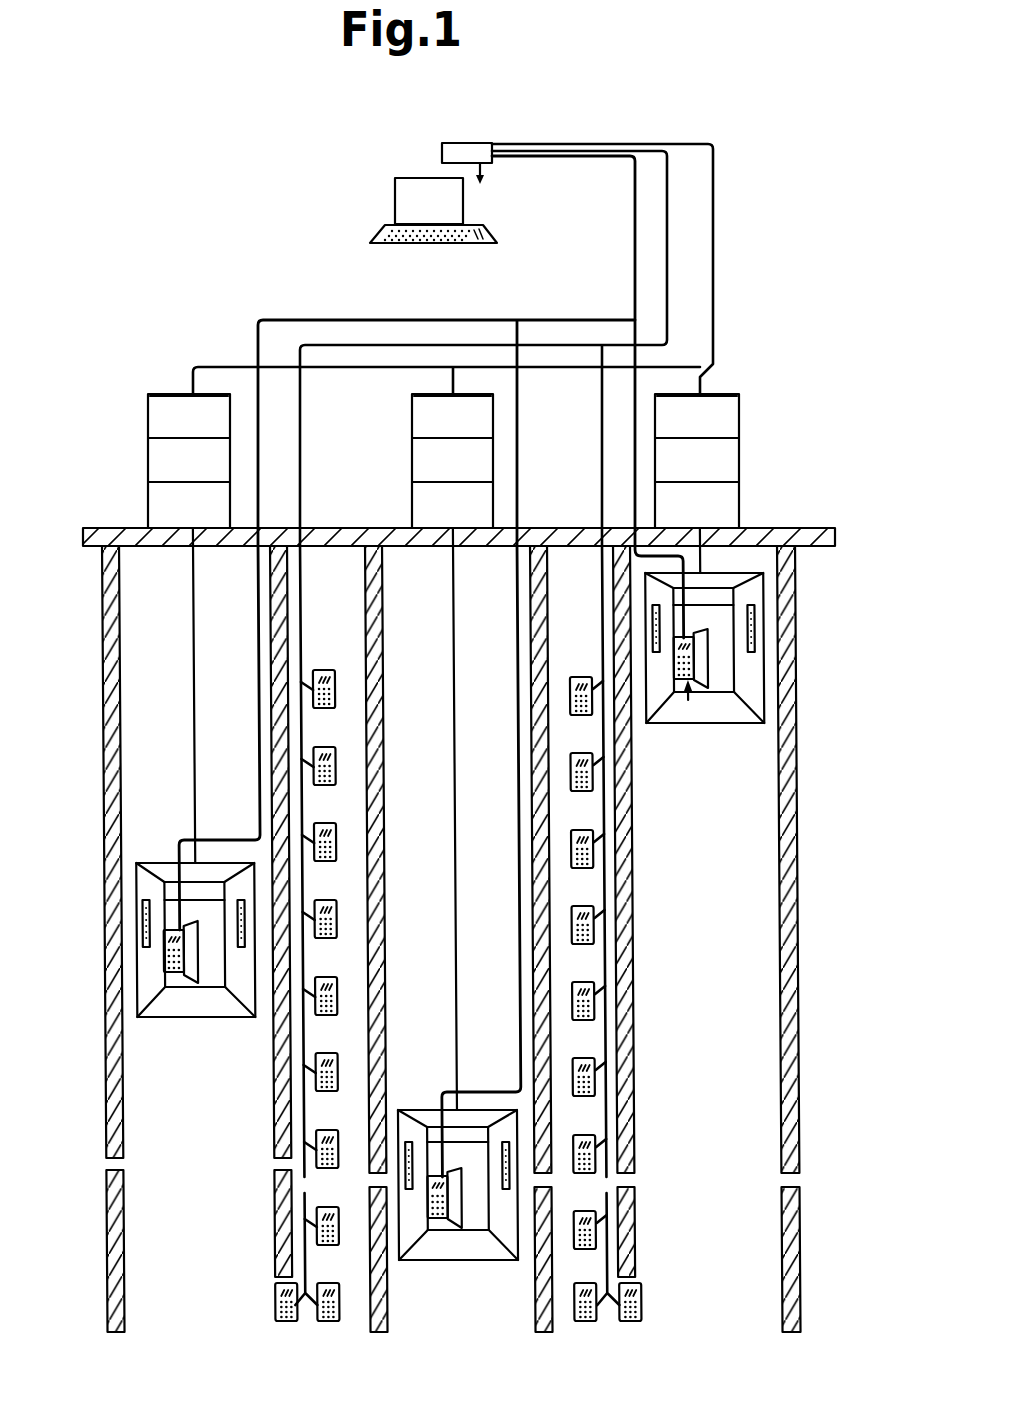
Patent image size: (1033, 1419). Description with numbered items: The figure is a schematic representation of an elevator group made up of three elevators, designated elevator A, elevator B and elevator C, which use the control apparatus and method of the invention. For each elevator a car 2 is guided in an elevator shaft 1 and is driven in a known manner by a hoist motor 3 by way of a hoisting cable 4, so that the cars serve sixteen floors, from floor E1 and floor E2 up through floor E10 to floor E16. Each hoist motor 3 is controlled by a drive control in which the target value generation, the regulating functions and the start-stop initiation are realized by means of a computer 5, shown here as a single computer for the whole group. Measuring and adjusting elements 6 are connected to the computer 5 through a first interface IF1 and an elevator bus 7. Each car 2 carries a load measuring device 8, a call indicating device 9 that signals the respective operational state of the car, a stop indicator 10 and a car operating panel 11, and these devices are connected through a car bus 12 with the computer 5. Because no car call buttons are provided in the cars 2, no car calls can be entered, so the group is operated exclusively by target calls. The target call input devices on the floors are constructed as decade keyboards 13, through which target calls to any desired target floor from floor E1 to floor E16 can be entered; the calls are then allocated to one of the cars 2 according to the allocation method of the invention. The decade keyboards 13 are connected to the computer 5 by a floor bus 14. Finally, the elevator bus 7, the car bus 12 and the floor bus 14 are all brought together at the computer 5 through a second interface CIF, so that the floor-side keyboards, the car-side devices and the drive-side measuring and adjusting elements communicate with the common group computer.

The elevator shaft 1 is at (140, 712).
The car 2 is at (150, 885).
The hoist motor 3 is at (165, 506).
The hoisting cable 4 is at (190, 617).
The computer 5 is at (395, 198).
The measuring and adjusting elements 6 is at (163, 461).
The elevator bus 7 is at (715, 180).
The load measuring device 8 is at (763, 682).
The call indicating device 9 is at (693, 653).
The stop indicator 10 is at (756, 610).
The car operating panel 11 is at (687, 700).
The car bus 12 is at (634, 254).
The decade keyboards 13 is at (595, 911).
The floor bus 14 is at (668, 233).
The first interface IF1 is at (163, 415).
The second interface CIF is at (468, 136).
The floor E1 is at (323, 1283).
The floor E2 is at (322, 1207).
The floor E10 is at (321, 1130).
The floor E16 is at (323, 670).
The elevator A is at (163, 939).
The elevator B is at (468, 1305).
The elevator C is at (717, 1305).